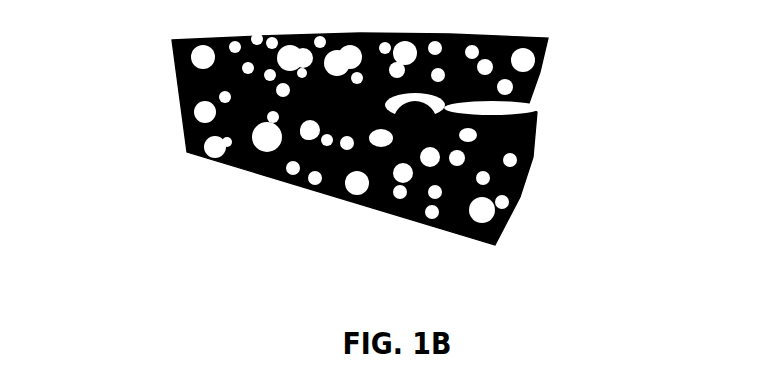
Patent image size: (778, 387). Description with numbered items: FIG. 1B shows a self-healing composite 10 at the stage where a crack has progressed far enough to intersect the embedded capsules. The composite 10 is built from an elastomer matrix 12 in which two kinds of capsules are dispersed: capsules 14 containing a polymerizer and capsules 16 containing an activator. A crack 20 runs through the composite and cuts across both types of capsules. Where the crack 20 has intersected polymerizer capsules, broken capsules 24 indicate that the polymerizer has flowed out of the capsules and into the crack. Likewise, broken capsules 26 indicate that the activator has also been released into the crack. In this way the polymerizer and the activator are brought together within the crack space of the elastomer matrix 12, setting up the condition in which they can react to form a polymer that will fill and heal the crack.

The composite 10 is at (158, 97).
The elastomer matrix 12 is at (454, 198).
The capsules containing a polymerizer 14 is at (260, 138).
The capsules containing an activator 16 is at (188, 154).
The crack 20 is at (562, 104).
The broken capsules 24 is at (363, 201).
The broken capsules 26 is at (532, 157).